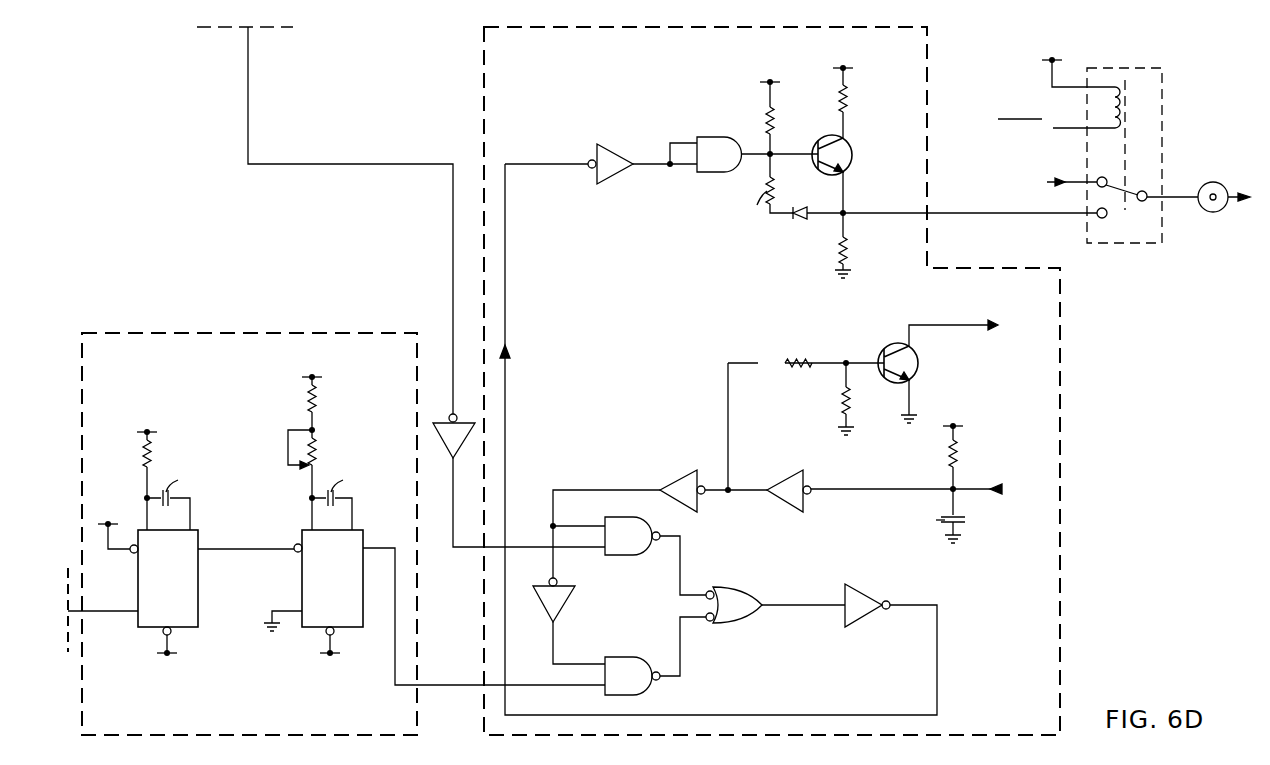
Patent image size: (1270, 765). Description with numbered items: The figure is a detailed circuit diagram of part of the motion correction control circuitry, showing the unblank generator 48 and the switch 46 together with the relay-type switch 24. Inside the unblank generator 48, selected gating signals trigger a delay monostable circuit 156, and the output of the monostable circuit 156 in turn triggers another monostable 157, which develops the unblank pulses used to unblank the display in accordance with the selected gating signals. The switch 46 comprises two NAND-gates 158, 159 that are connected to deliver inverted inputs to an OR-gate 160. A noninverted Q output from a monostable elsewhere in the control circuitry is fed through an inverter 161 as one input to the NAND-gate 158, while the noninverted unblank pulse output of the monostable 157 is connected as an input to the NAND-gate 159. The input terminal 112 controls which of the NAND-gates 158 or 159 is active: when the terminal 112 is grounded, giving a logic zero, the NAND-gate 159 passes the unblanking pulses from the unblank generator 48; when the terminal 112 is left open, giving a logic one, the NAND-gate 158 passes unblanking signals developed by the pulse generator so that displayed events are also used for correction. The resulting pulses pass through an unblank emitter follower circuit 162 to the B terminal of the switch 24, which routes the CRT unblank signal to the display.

The delay monostable circuit 156 is at (185, 607).
The monostable 157 is at (302, 571).
The NAND-gate 158 is at (612, 550).
The NAND-gate 159 is at (636, 664).
The OR-gate 160 is at (748, 612).
The inverter 161 is at (446, 427).
The unblank emitter follower circuit 162 is at (761, 123).
The input terminal 112 is at (1002, 488).
The switch 24 is at (1150, 233).
The switch 46 is at (980, 702).
The unblank generator 48 is at (254, 712).